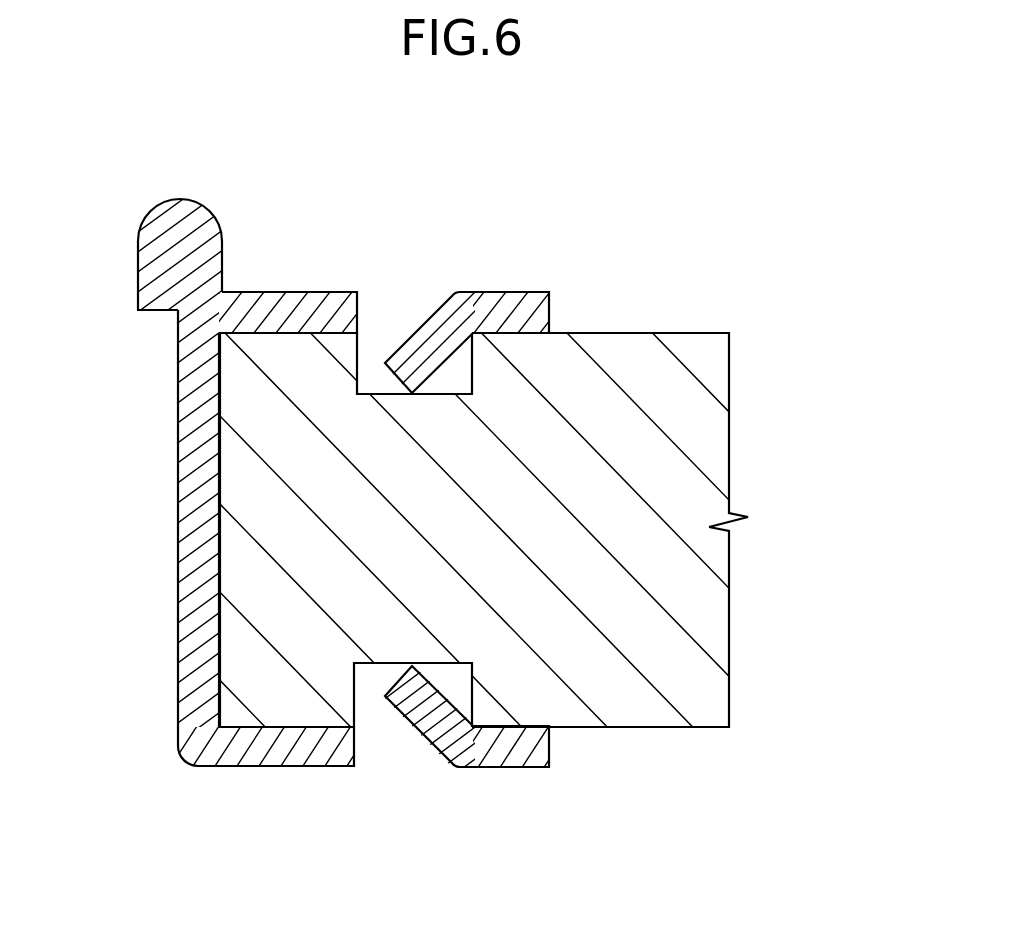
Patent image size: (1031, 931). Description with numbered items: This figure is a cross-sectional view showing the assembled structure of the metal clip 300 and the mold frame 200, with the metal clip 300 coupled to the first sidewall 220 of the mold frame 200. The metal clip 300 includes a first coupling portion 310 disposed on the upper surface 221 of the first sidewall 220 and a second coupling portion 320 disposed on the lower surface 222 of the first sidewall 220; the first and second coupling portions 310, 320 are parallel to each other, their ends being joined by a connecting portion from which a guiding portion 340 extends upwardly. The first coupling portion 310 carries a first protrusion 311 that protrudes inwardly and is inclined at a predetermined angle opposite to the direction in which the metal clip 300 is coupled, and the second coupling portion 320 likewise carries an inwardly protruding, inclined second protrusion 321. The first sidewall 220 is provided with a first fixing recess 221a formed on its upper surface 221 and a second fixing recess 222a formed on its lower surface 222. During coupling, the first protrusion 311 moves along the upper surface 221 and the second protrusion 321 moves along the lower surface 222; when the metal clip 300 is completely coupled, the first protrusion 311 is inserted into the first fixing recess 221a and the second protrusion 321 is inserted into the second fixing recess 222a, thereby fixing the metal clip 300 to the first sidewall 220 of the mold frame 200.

The mold frame 200 is at (515, 537).
The first sidewall 220 is at (515, 527).
The upper surface 221 is at (700, 333).
The first fixing recess 221a is at (462, 373).
The lower surface 222 is at (695, 726).
The second fixing recess 222a is at (458, 679).
The metal clip 300 is at (145, 216).
The first coupling portion 310 is at (303, 310).
The first protrusion 311 is at (437, 325).
The second coupling portion 320 is at (300, 750).
The second protrusion 321 is at (425, 742).
The guiding portion 340 is at (150, 274).